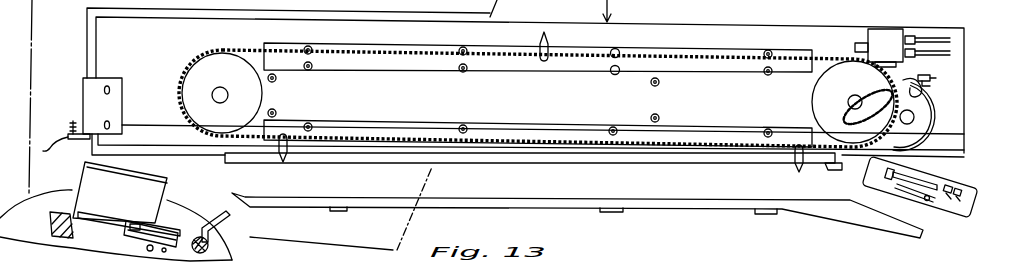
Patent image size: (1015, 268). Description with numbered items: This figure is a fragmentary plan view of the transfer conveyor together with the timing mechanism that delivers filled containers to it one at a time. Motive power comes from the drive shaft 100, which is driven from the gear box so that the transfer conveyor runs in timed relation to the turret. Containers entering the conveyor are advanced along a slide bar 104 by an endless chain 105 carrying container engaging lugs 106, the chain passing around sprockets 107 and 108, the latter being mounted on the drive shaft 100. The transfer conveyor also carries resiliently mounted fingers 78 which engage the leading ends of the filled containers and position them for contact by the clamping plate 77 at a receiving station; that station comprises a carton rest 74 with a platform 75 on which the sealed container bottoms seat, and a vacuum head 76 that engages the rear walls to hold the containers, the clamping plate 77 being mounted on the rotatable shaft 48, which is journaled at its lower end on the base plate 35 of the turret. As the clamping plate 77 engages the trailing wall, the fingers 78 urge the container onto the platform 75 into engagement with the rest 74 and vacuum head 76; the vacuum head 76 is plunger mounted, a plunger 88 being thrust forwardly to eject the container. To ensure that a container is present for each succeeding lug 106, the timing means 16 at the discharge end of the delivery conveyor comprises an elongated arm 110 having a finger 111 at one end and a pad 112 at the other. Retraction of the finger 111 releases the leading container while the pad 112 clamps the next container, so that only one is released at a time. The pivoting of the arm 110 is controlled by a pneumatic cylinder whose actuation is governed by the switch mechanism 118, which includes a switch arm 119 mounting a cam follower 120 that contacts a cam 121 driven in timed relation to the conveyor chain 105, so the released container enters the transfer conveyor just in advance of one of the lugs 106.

The timing means 16 is at (968, 177).
The base plate 35 is at (30, 230).
The rotatable shaft 48 is at (212, 238).
The carton rest 74 is at (88, 210).
The platform 75 is at (157, 200).
The vacuum head 76 is at (137, 239).
The clamping plate 77 is at (229, 220).
The resiliently mounted fingers 78 is at (47, 146).
The plunger 88 is at (161, 253).
The drive shaft 100 is at (221, 92).
The slide bar 104 is at (688, 163).
The endless chain 105 is at (525, 133).
The container engaging lugs 106 is at (549, 40).
The sprocket 107 is at (815, 100).
The sprocket 108 is at (250, 97).
The elongated arm 110 is at (923, 192).
The finger 111 is at (905, 188).
The pad 112 is at (950, 213).
The switch mechanism 118 is at (887, 35).
The switch arm 119 is at (905, 78).
The cam follower 120 is at (932, 89).
The cam 121 is at (922, 117).